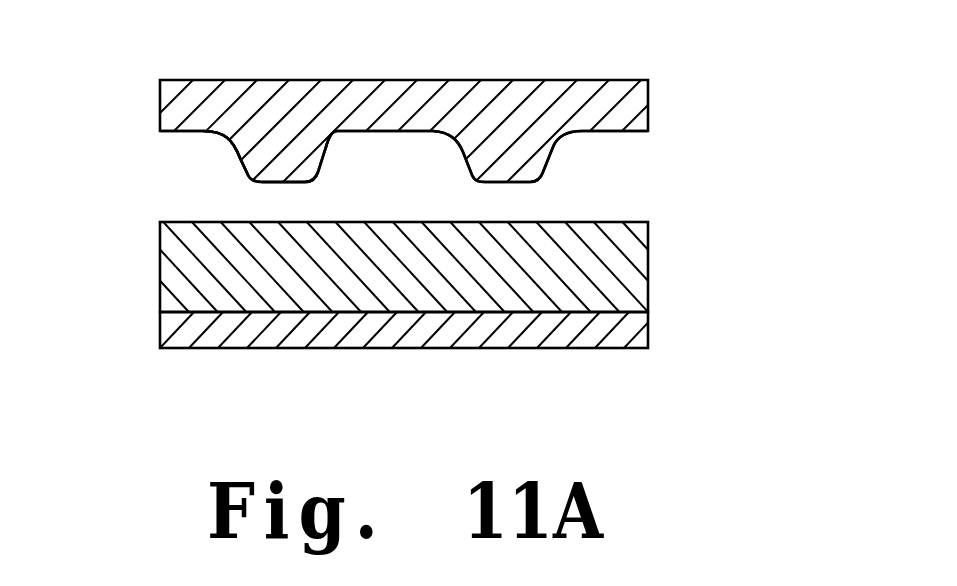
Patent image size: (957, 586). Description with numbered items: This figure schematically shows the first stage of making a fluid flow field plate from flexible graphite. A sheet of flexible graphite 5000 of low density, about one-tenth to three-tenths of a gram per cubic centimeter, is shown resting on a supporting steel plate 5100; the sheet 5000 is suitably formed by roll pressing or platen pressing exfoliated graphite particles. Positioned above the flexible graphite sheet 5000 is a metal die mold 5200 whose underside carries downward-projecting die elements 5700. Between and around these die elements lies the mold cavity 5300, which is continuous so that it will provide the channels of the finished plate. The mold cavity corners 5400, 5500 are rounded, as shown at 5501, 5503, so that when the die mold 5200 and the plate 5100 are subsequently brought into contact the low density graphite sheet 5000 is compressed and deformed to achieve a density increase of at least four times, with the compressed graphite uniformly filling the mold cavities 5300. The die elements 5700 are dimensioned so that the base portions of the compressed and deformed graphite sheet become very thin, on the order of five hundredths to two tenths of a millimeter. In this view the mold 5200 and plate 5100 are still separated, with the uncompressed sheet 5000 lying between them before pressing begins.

The sheet of flexible graphite 5000 is at (648, 243).
The steel plate 5100 is at (648, 333).
The metal die mold 5200 is at (625, 80).
The mold cavity 5300 is at (172, 141).
The mold cavity corner 5400 is at (233, 133).
The mold cavity corner 5500 is at (258, 184).
The rounded corner 5501 is at (313, 183).
The rounded corner 5503 is at (337, 133).
The die element 5700 is at (283, 172).